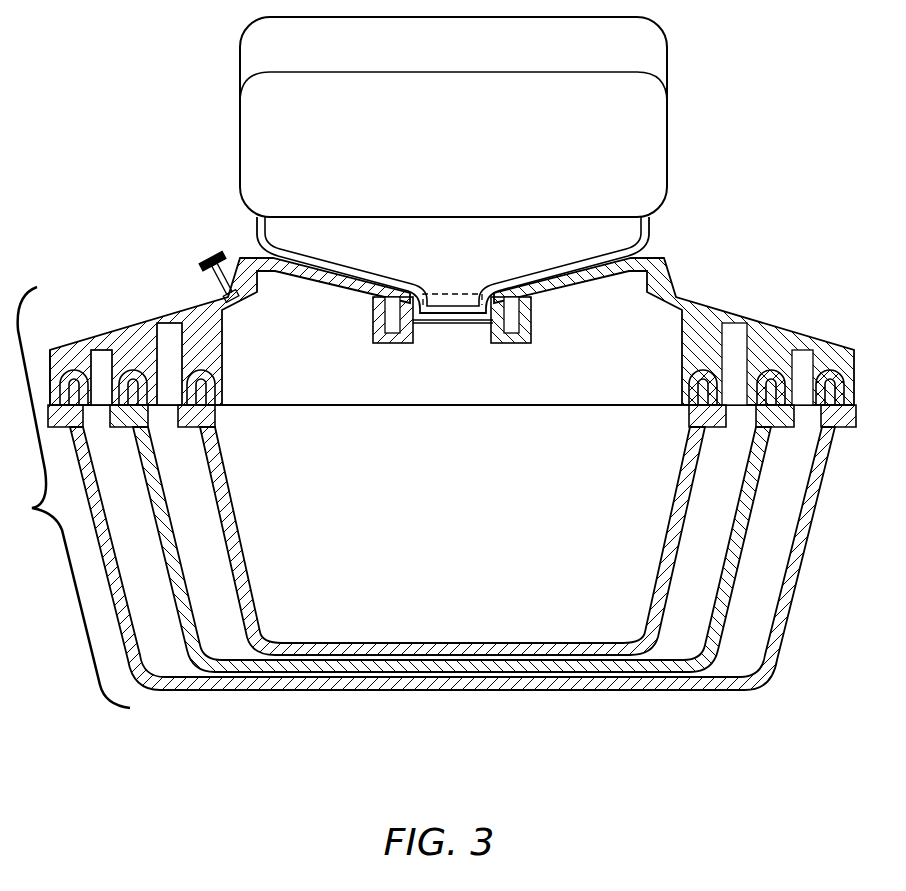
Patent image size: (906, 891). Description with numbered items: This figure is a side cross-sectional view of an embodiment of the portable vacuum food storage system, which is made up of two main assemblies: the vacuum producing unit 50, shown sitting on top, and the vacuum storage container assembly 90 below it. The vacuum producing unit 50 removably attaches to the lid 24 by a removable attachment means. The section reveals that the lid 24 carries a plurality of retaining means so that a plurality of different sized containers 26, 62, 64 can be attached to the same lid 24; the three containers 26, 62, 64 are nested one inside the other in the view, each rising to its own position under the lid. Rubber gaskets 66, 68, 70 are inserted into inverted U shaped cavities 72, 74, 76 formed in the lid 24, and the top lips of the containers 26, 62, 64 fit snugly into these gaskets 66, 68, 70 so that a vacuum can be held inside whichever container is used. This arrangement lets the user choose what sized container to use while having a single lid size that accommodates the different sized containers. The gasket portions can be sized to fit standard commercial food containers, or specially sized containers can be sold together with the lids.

The lid 24 is at (745, 312).
The container 26 is at (166, 691).
The vacuum producing unit 50 is at (240, 7).
The container 62 is at (231, 668).
The container 64 is at (313, 650).
The rubber gasket 66 is at (77, 373).
The rubber gasket 68 is at (140, 373).
The rubber gasket 70 is at (217, 373).
The inverted U shaped cavity 72 is at (50, 368).
The inverted U shaped cavity 74 is at (118, 372).
The inverted U shaped cavity 76 is at (192, 372).
The vacuum storage container assembly 90 is at (65, 497).